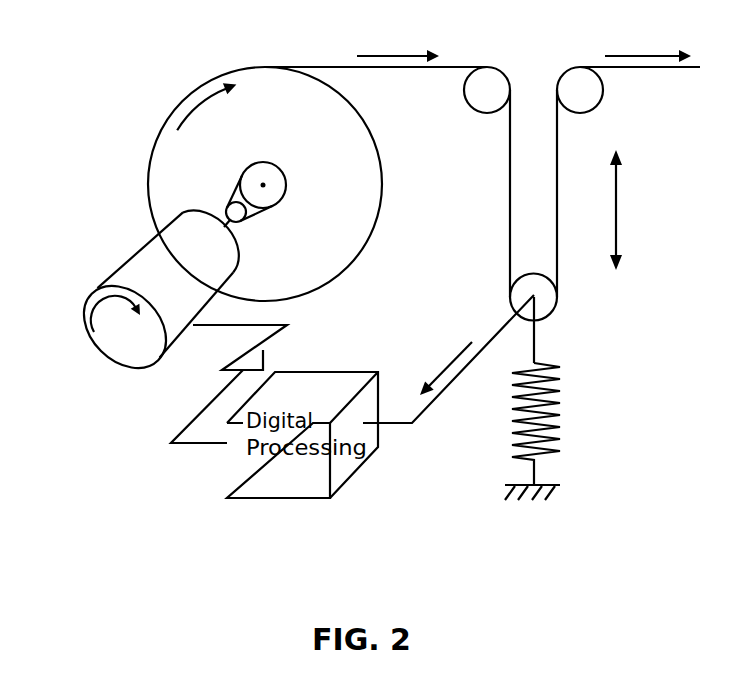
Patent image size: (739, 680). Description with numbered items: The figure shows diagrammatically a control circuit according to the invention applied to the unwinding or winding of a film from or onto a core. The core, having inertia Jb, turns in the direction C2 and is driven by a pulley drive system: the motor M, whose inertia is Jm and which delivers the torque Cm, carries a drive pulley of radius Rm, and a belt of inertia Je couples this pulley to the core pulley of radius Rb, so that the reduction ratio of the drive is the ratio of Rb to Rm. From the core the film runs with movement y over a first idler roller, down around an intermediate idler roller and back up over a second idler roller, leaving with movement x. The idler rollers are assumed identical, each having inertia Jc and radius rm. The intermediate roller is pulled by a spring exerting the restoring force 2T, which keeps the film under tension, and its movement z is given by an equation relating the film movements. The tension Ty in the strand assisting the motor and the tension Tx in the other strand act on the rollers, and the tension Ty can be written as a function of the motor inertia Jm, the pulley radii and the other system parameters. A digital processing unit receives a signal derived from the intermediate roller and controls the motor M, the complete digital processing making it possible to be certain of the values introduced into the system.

The core inertia Jb is at (265, 184).
The drum rotation direction C2 is at (206, 113).
The driven pulley radius Rb is at (272, 173).
The drive pulley radius Rm is at (250, 231).
The drive belt inertia Je is at (231, 198).
The motor M is at (164, 289).
The inertia of the motor Jm is at (102, 231).
The torque delivered by the motor Cm is at (50, 319).
The idler roller inertia Jc is at (523, 194).
The idler roller radius rm is at (527, 194).
The tension Ty is at (363, 89).
The tension Tx is at (577, 144).
The film movement x is at (648, 46).
The film movement y is at (398, 44).
The movement of the idler roller z is at (607, 210).
The restoring force 2T is at (537, 398).